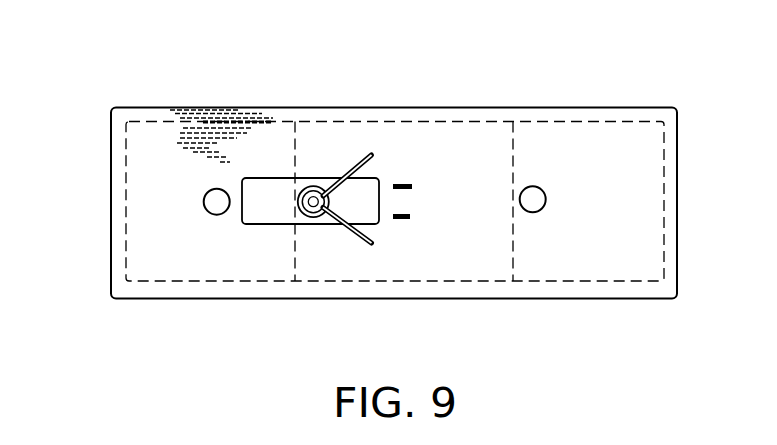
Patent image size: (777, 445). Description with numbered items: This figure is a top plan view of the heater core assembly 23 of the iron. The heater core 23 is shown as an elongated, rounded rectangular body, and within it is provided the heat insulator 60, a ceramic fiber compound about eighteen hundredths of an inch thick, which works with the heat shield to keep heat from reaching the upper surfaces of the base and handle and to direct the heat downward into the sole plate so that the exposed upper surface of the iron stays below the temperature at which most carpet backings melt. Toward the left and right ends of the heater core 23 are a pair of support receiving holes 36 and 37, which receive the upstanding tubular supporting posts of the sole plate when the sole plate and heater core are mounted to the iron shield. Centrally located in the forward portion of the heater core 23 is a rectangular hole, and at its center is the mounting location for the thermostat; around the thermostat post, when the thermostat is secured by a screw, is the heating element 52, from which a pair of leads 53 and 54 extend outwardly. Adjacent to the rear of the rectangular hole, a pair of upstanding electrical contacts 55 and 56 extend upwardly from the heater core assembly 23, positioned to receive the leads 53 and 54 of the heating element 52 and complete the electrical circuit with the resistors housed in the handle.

The heater core 23 is at (362, 92).
The support receiving hole 36 is at (204, 201).
The support receiving hole 37 is at (536, 212).
The heating element 52 is at (315, 218).
The lead 53 is at (357, 237).
The lead 54 is at (365, 150).
The upstanding electrical contact 55 is at (410, 217).
The upstanding electrical contact 56 is at (412, 186).
The heat insulator 60 is at (618, 82).